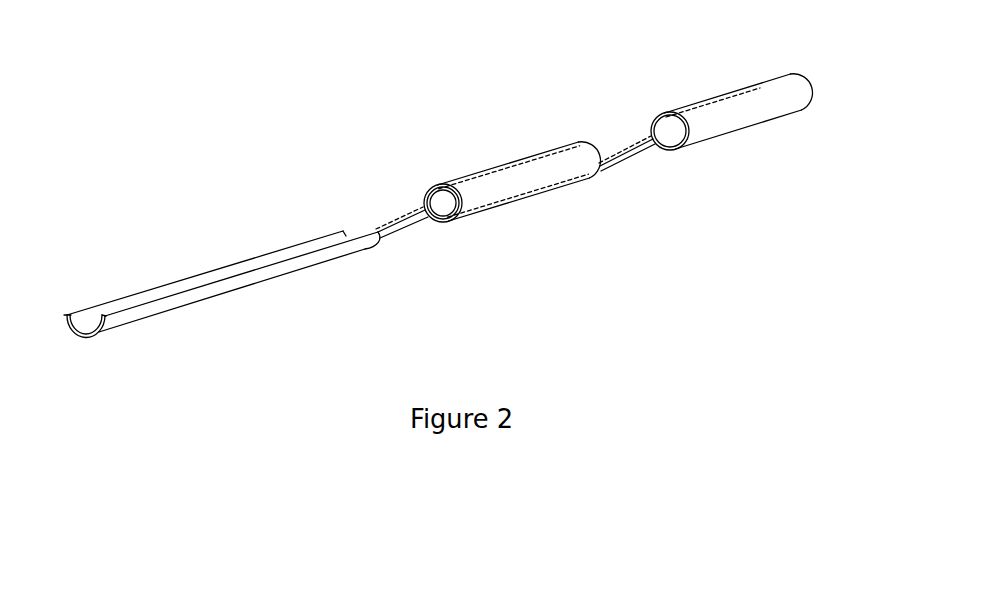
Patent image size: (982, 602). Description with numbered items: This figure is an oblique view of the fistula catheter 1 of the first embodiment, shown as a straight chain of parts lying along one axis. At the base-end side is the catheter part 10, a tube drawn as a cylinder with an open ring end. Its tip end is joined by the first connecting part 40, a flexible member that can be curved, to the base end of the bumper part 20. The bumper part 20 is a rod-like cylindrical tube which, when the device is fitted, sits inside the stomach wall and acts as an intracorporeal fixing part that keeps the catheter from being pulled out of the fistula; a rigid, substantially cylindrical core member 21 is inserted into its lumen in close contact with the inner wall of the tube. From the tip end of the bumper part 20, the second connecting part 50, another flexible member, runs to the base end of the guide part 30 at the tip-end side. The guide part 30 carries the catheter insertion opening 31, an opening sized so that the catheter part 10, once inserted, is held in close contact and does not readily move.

The fistula catheter 1 is at (656, 66).
The catheter part 10 is at (727, 132).
The bumper part 20 is at (520, 193).
The core member 21 is at (510, 203).
The guide part 30 is at (222, 284).
The catheter insertion opening 31 is at (218, 297).
The first connecting part 40 is at (637, 165).
The second connecting part 50 is at (407, 235).